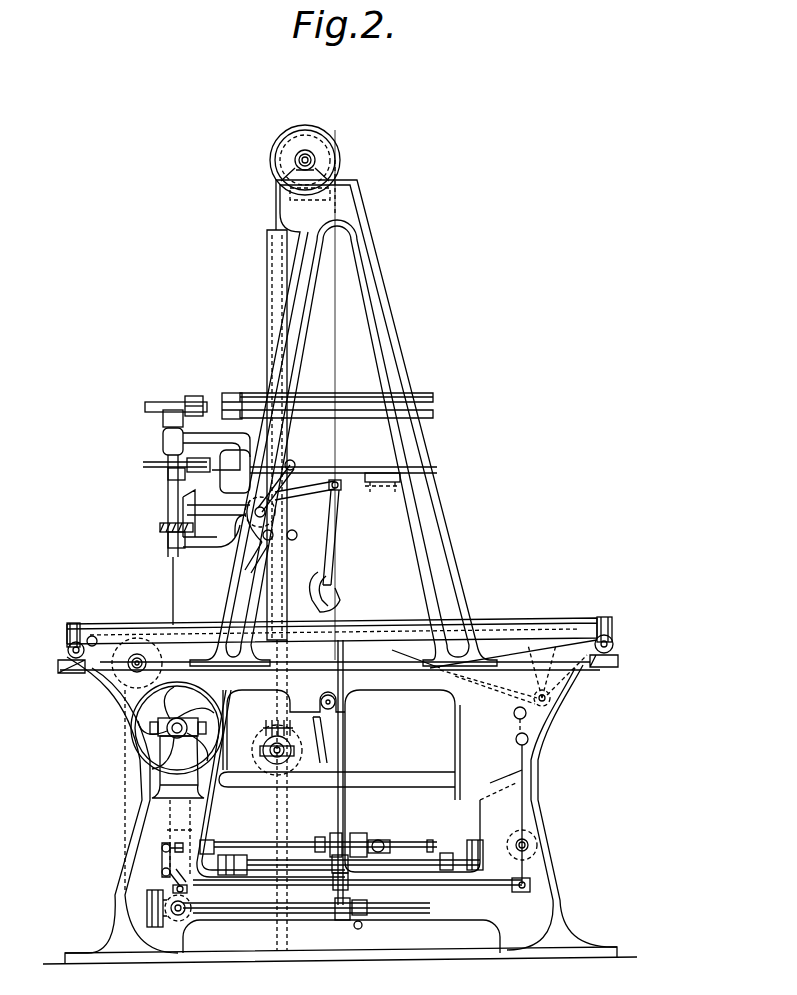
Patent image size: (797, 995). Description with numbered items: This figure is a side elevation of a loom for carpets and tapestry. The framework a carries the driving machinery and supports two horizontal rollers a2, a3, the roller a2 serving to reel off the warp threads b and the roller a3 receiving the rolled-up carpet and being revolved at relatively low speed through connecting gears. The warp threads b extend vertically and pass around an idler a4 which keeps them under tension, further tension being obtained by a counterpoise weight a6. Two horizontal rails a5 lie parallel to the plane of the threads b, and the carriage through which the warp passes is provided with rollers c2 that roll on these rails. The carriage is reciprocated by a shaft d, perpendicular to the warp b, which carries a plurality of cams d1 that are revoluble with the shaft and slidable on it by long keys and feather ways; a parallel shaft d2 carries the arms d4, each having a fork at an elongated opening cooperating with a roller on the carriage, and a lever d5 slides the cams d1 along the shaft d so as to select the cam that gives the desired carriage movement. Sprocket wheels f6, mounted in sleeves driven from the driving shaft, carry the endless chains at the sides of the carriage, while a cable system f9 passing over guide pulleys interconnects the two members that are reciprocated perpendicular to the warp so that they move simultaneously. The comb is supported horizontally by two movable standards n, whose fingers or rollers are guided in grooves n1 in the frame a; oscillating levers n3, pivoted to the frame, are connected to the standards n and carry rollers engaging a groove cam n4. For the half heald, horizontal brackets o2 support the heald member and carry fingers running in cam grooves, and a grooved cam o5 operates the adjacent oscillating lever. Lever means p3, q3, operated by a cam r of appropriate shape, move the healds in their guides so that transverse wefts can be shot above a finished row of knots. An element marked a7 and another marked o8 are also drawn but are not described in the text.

The framework a is at (542, 788).
The horizontal roller a2 is at (318, 138).
The horizontal roller a3 is at (295, 748).
The idler a4 is at (338, 708).
The horizontal rails a5 is at (66, 647).
The counterpoise weight a6 is at (293, 462).
The fly-wheel a7 is at (168, 737).
The warp threads b is at (335, 267).
The rollers c2 is at (75, 622).
The shaft d is at (245, 848).
The cams d1 is at (330, 838).
The shaft d2 is at (423, 860).
The arms d4 is at (345, 838).
The lever d5 is at (527, 728).
The sprocket wheels f6 is at (128, 700).
The cable system f9 is at (127, 657).
The movable standards n is at (337, 532).
The grooves n1 is at (268, 560).
The oscillating levers n3 is at (317, 493).
The groove cam n4 is at (323, 545).
The horizontal brackets o2 is at (385, 483).
The grooved cam o5 is at (143, 465).
The bar o8 is at (350, 467).
The lever means p3 is at (215, 395).
The lever means q3 is at (212, 408).
The cam r is at (165, 402).